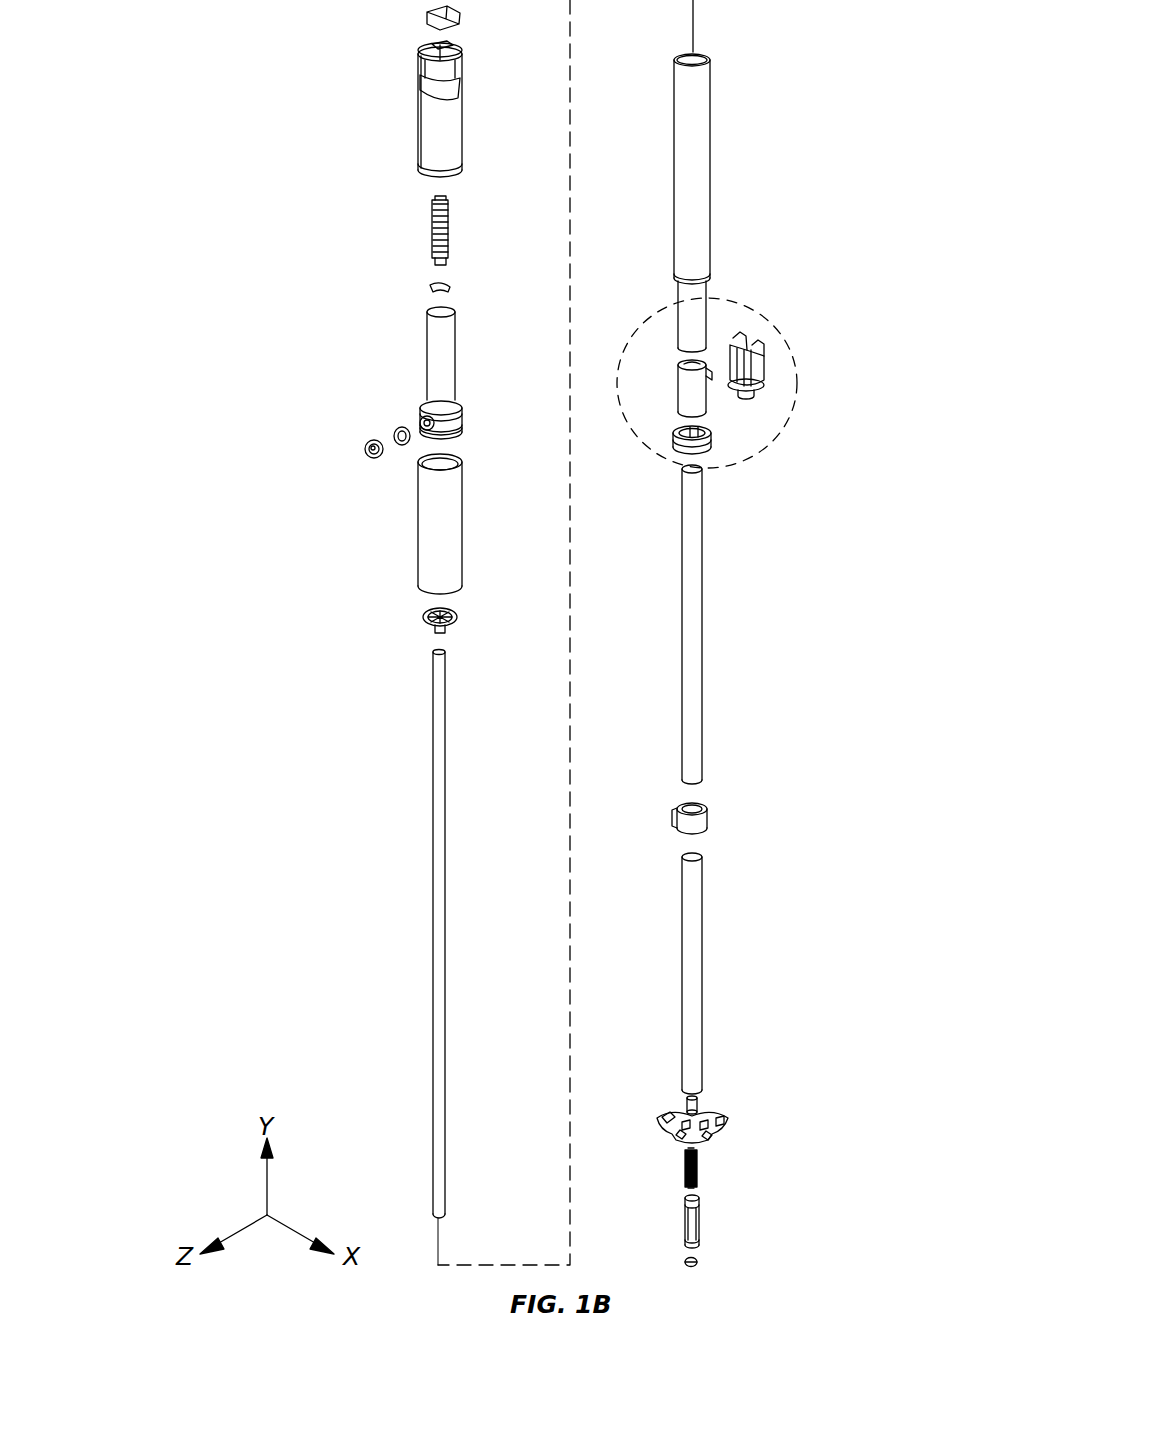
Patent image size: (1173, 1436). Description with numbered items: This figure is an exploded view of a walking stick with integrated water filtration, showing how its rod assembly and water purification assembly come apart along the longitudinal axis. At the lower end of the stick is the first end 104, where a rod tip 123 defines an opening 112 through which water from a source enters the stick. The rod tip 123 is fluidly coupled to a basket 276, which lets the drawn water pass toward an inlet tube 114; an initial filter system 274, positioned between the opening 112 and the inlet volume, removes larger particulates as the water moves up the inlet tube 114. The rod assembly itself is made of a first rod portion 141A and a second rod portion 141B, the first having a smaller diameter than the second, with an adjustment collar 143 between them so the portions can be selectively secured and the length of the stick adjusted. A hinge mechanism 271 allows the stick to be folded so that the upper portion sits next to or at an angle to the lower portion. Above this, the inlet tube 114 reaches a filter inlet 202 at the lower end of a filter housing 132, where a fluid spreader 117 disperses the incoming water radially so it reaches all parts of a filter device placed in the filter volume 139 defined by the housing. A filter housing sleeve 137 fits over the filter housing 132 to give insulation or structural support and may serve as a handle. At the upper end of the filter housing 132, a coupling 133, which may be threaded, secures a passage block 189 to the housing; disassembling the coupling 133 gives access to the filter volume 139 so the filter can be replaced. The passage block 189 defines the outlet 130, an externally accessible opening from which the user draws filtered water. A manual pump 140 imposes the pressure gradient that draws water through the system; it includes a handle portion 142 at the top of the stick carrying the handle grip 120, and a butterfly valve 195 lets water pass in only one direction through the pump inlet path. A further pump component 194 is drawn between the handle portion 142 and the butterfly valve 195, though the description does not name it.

The handle grip 120 is at (455, 110).
The handle portion 142 is at (462, 143).
The spring 194 is at (450, 228).
The butterfly valve 195 is at (450, 288).
The manual pump 140 is at (360, 8).
The outlet 130 is at (424, 420).
The passage block 189 is at (460, 418).
The coupling 133 is at (458, 438).
The filter housing sleeve 137 is at (450, 535).
The fluid spreader 117 is at (455, 618).
The inlet tube 114 is at (441, 920).
The filter volume 139 is at (688, 56).
The filter housing 132 is at (707, 210).
The filter inlet 202 is at (708, 313).
The hinge mechanism 271 is at (800, 393).
The second rod portion 141B is at (697, 665).
The adjustment collar 143 is at (707, 820).
The first rod portion 141A is at (697, 1005).
The basket 276 is at (722, 1110).
The initial filter system 274 is at (697, 1178).
The opening 112 is at (702, 1226).
The first end 104 is at (746, 1242).
The rod tip 123 is at (770, 1175).